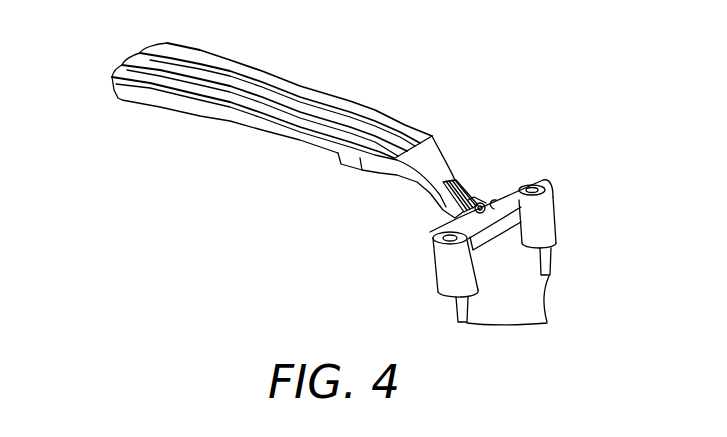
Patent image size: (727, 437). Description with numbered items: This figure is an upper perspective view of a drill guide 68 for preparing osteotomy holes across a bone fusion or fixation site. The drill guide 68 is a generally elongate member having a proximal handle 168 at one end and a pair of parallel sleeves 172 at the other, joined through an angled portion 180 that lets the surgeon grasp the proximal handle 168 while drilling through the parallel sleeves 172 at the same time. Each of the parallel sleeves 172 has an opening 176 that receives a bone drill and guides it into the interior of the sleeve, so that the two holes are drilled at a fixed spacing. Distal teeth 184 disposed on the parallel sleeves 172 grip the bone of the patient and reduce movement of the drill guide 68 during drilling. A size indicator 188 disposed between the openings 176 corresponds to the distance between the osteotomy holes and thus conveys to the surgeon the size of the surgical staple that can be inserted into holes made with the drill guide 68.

The drill guide 68 is at (480, 54).
The proximal handle 168 is at (148, 108).
The parallel sleeves 172 is at (455, 305).
The opening 176 is at (437, 236).
The angled portion 180 is at (445, 153).
The distal teeth 184 is at (547, 323).
The size indicator 188 is at (481, 200).